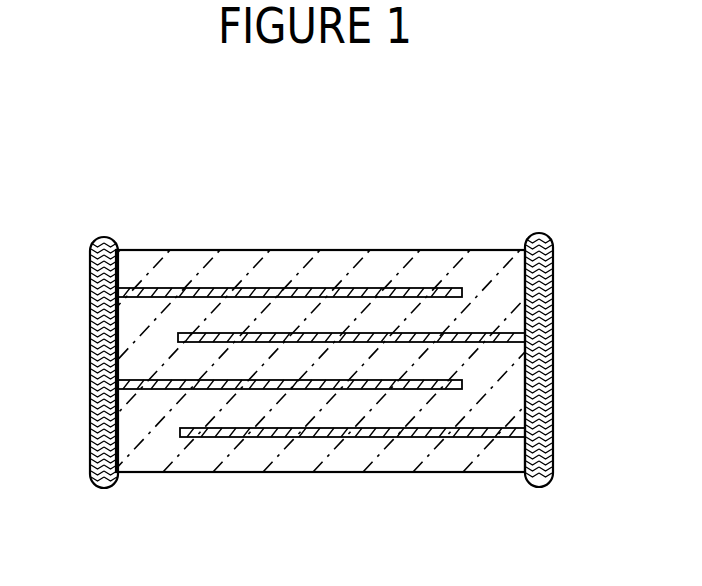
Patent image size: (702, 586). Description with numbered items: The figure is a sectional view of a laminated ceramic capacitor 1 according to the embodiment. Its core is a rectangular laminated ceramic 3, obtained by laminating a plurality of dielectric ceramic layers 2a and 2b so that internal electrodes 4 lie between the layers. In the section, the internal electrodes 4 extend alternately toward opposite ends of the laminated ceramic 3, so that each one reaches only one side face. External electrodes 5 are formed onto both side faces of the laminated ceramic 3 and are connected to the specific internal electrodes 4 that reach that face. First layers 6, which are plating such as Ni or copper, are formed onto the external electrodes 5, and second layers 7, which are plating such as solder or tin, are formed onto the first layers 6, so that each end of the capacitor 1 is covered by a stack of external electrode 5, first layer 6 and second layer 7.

The laminated ceramic capacitor 1 is at (124, 160).
The dielectric ceramic layer 2a is at (345, 267).
The dielectric ceramic layer 2b is at (413, 300).
The laminated ceramic 3 is at (247, 249).
The internal electrode 4 is at (151, 288).
The external electrode 5 is at (97, 284).
The first layer 6 is at (100, 343).
The second layer 7 is at (92, 421).